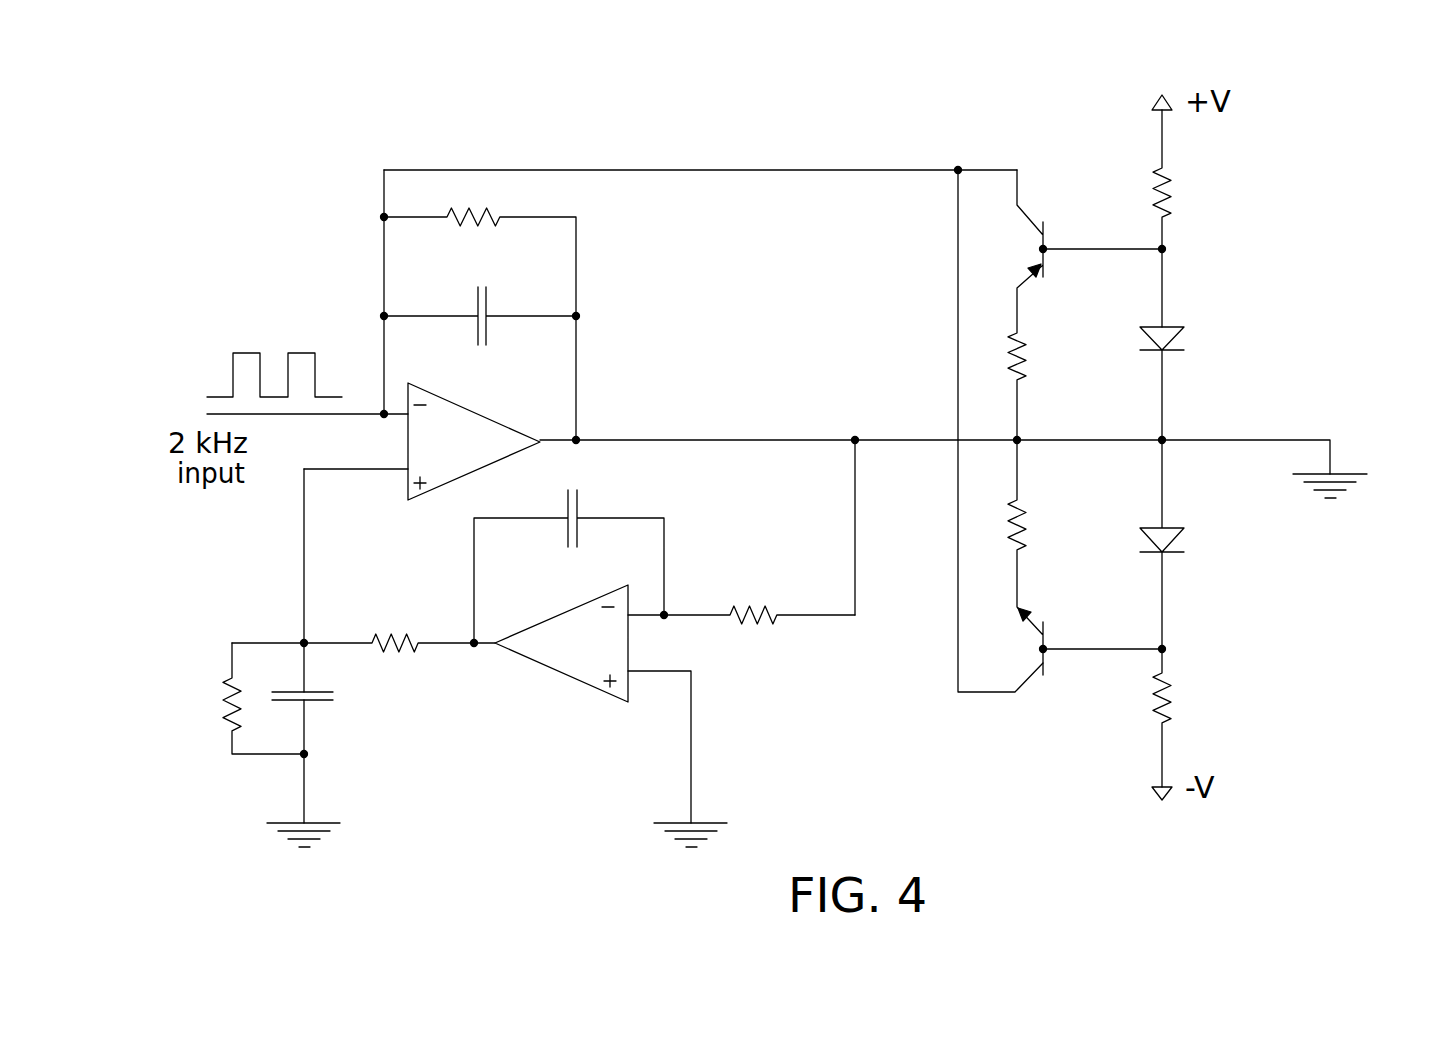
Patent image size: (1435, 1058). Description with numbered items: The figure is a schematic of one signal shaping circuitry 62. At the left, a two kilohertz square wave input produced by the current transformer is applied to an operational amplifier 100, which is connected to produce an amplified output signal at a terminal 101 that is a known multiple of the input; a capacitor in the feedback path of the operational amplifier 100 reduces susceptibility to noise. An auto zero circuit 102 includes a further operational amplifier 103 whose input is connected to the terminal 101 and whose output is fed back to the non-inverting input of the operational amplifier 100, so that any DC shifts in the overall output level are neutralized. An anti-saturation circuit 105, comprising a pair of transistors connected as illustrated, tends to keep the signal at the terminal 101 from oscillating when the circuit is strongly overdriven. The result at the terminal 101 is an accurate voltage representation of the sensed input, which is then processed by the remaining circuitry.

The signal shaping circuitry 62 is at (1338, 815).
The operational amplifier 100 is at (495, 420).
The terminal 101 is at (855, 415).
The auto zero circuit 102 is at (735, 658).
The further operational amplifier 103 is at (565, 677).
The anti-saturation circuit 105 is at (937, 707).